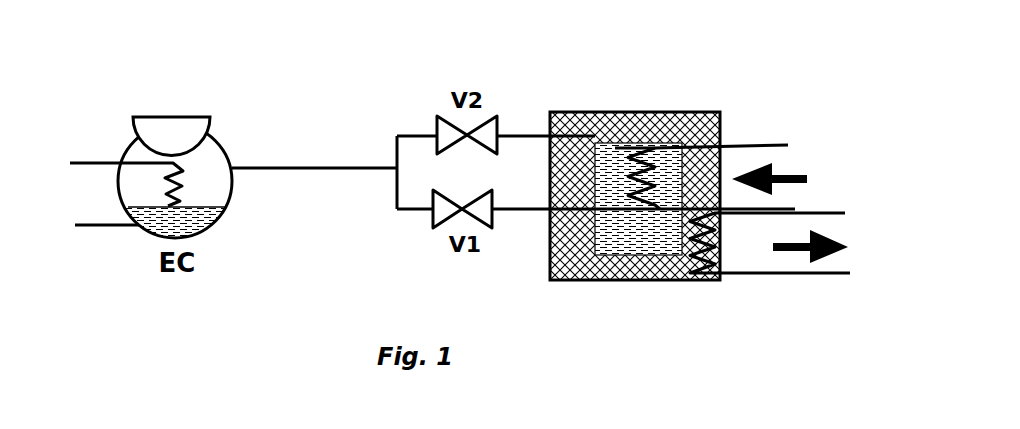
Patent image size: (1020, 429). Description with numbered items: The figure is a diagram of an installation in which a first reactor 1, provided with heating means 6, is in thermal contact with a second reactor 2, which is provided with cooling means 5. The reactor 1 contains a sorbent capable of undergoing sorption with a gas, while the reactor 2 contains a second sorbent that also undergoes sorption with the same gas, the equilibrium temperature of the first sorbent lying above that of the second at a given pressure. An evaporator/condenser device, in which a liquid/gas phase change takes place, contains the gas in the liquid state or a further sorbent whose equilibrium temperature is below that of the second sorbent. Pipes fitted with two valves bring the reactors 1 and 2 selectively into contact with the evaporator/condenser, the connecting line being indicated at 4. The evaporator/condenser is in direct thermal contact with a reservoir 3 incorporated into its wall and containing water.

The reactor 1 is at (615, 148).
The reactor 2 is at (570, 120).
The reservoir 3 is at (163, 125).
The conduit 4 is at (305, 166).
The cooling means 5 is at (821, 246).
The heating means 6 is at (780, 177).